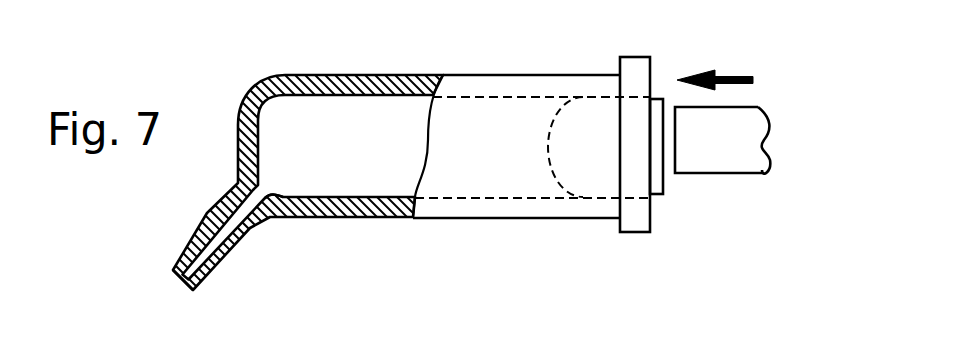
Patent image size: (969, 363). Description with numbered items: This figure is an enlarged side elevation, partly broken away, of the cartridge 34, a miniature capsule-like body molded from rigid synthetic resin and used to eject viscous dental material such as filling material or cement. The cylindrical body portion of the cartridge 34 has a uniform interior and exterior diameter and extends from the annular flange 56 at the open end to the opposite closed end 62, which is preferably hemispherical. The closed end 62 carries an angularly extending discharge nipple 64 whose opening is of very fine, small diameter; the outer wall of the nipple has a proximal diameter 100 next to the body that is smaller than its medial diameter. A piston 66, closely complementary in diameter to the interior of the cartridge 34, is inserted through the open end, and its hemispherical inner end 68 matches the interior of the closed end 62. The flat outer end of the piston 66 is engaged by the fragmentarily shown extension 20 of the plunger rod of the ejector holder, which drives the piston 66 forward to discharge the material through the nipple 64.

The extension 20 is at (727, 161).
The cartridge 34 is at (363, 220).
The annular flange 56 is at (633, 58).
The closed end 62 is at (239, 144).
The discharge nipple 64 is at (237, 268).
The piston 66 is at (656, 106).
The inner end 68 is at (550, 157).
The proximal diameter 100 is at (263, 223).